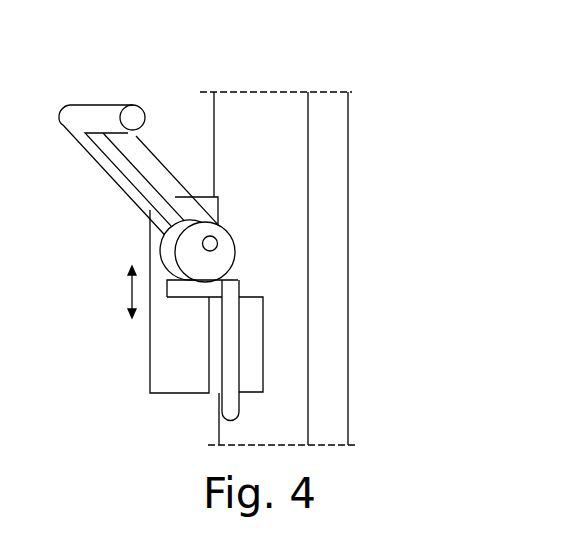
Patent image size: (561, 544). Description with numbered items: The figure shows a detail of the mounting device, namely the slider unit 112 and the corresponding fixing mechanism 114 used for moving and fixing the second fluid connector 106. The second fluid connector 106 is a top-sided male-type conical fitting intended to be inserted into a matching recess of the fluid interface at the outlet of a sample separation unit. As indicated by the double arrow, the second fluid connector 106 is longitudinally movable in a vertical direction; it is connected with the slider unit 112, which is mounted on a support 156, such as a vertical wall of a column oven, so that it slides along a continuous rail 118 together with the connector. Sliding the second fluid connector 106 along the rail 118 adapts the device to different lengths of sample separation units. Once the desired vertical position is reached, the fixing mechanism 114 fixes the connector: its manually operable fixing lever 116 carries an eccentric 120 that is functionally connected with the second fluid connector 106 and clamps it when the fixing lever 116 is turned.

The second fluid connector 106 is at (220, 398).
The slider unit 112 is at (148, 338).
The fixing mechanism 114 is at (92, 104).
The fixing lever 116 is at (133, 116).
The rail 118 is at (253, 333).
The eccentric 120 is at (203, 241).
The support 156 is at (333, 166).